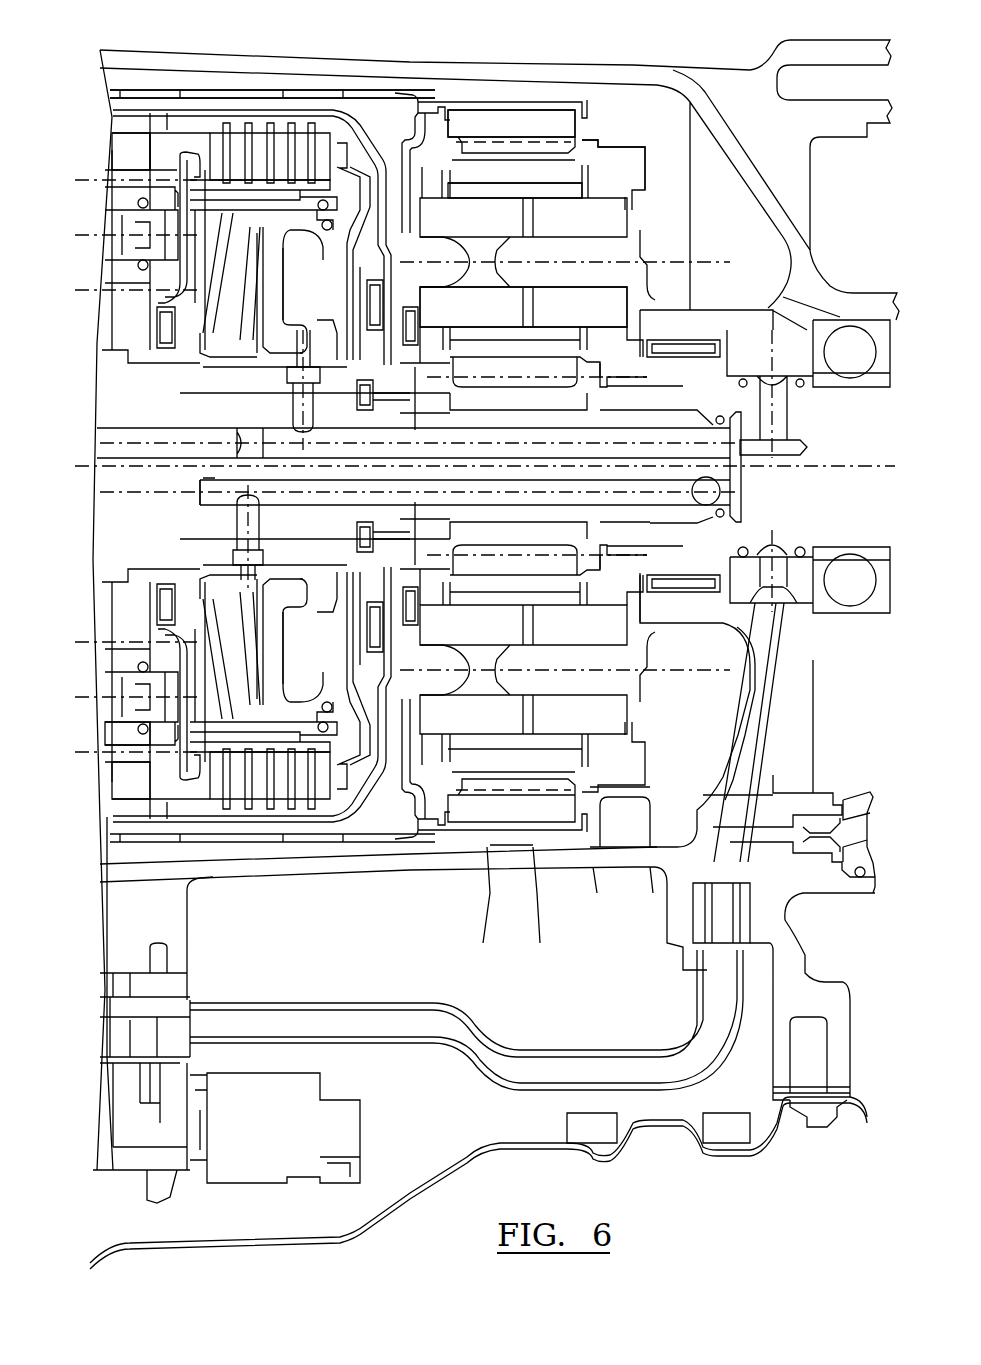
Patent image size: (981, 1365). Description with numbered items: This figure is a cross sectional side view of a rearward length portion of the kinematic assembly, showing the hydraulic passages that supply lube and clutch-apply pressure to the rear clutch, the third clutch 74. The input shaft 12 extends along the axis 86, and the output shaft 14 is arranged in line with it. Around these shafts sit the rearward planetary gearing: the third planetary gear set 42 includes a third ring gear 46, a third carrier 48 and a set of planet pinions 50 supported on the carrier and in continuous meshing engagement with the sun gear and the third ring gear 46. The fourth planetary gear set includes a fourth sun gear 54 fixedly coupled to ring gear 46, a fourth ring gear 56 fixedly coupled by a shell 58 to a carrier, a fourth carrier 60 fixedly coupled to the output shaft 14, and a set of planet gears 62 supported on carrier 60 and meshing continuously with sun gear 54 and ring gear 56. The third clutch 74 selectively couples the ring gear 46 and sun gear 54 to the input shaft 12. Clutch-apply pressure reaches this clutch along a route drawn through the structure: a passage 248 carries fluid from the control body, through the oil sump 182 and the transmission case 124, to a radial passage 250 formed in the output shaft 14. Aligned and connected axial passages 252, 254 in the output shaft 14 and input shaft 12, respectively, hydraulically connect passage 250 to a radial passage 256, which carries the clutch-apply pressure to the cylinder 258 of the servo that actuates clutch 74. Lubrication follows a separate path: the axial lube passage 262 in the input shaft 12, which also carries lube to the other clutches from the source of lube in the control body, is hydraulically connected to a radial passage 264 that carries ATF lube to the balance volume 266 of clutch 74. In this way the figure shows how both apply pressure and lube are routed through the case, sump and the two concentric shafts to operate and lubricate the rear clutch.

The input shaft 12 is at (200, 490).
The output shaft 14 is at (850, 522).
The third planetary gear set 42 is at (170, 138).
The third ring gear 46 is at (133, 143).
The third carrier 48 is at (160, 740).
The planet pinions 50 is at (110, 713).
The fourth sun gear 54 is at (497, 400).
The fourth ring gear 56 is at (547, 127).
The shell 58 is at (353, 93).
The fourth carrier 60 is at (630, 173).
The planet gears 62 is at (500, 190).
The third clutch 74 is at (306, 660).
The axis 86 is at (88, 457).
The transmission case 124 is at (380, 67).
The oil sump 182 is at (217, 1217).
The passage 248 is at (760, 678).
The radial passage 250 is at (780, 577).
The axial passage 252 is at (793, 437).
The axial passage 254 is at (707, 455).
The radial passage 256 is at (297, 407).
The cylinder 258 is at (270, 296).
The axial lube passage 262 is at (215, 497).
The radial passage 264 is at (237, 530).
The balance volume 266 is at (241, 230).